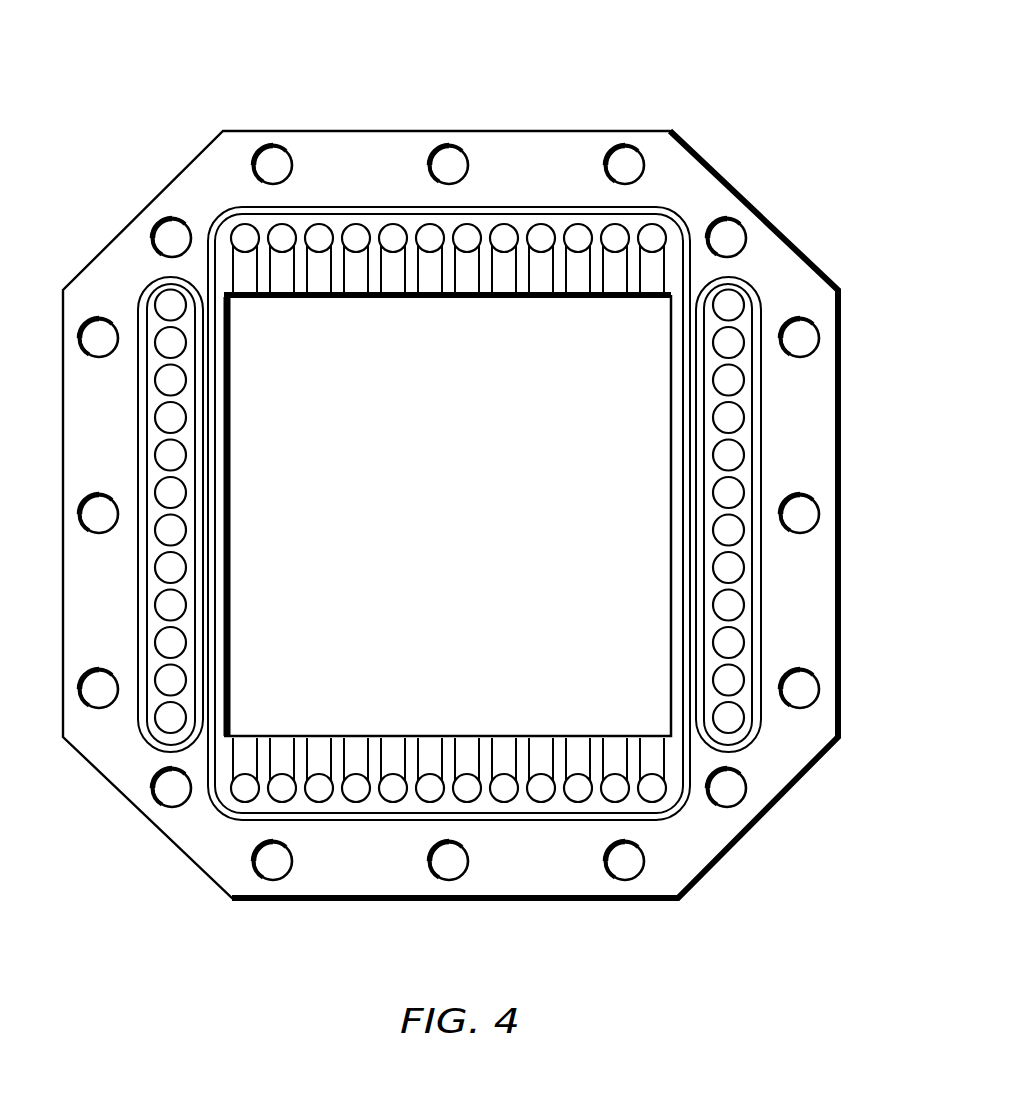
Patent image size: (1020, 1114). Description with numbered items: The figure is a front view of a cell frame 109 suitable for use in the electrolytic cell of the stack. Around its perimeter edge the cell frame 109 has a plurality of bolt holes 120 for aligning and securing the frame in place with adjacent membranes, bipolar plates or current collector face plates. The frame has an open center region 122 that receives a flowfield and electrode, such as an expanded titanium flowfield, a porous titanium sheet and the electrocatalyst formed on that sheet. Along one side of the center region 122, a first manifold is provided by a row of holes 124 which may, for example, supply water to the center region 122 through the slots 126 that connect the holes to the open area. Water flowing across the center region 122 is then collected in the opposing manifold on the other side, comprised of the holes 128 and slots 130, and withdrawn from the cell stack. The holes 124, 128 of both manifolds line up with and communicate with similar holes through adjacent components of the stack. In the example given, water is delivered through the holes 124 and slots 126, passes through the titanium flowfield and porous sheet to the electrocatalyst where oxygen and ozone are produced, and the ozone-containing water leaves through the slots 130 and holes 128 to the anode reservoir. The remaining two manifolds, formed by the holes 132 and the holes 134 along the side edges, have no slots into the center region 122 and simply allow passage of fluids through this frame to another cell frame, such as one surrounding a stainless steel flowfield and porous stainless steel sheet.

The cell frame 109 is at (825, 92).
The bolt holes 120 is at (278, 146).
The center region 122 is at (470, 508).
The holes 124 is at (500, 224).
The slots 126 is at (472, 280).
The holes 128 is at (403, 803).
The slots 130 is at (470, 747).
The holes 132 is at (743, 448).
The holes 134 is at (157, 372).